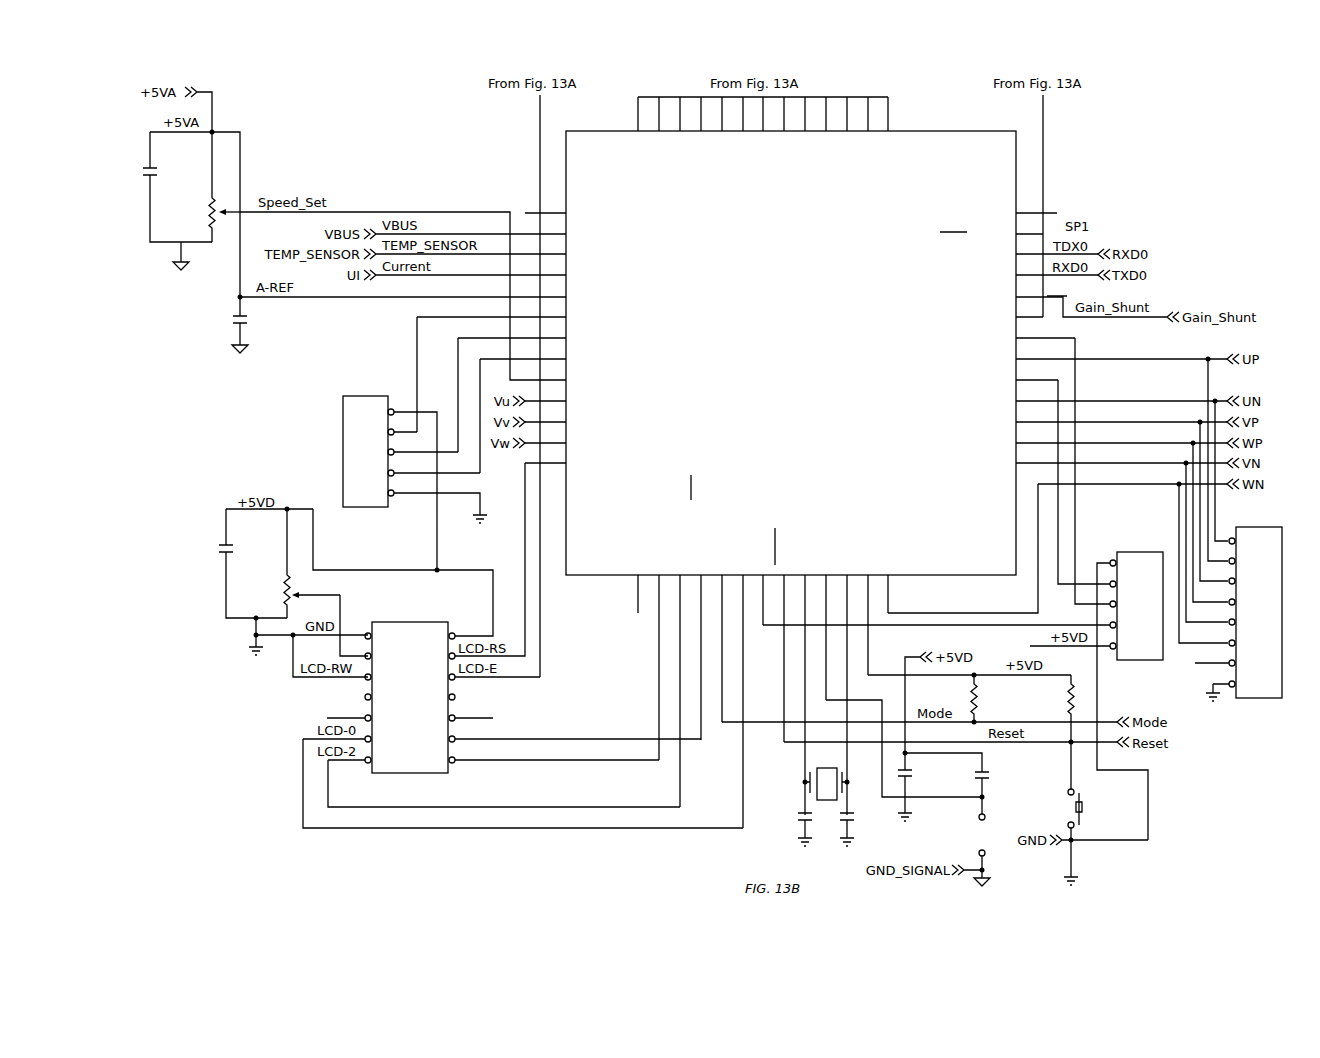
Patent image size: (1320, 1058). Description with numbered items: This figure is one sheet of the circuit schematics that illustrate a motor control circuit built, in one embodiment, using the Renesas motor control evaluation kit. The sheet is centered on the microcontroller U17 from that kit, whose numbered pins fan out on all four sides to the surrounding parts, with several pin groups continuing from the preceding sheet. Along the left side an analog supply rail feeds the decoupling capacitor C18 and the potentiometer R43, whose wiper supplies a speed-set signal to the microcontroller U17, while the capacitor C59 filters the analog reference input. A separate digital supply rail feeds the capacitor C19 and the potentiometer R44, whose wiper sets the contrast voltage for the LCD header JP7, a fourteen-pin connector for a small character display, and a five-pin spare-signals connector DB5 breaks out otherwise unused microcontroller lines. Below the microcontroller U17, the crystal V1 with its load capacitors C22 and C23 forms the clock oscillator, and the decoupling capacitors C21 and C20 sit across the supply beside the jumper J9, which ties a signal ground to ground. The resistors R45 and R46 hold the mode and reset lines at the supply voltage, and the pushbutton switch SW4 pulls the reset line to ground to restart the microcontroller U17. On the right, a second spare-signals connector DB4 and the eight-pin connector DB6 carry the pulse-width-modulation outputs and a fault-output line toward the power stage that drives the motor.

The microcontroller R8C25 U17 is at (876, 462).
The capacitor 0.1uF C18 is at (168, 176).
The potentiometer 10K speed set R43 is at (207, 194).
The capacitor 0.1uF C59 is at (218, 325).
The capacitor 0.1uF C19 is at (246, 554).
The potentiometer 10K R44 is at (296, 571).
The spare signals 1 connector DB5 is at (408, 474).
The LCD 0802 connector JP7 is at (502, 699).
The 20MHz crystal V1 is at (800, 775).
The capacitor 22pF C22 is at (786, 823).
The capacitor 22pF C23 is at (865, 823).
The capacitor 0.1uF C21 is at (925, 788).
The capacitor 1uF 35V C20 is at (1013, 785).
The jumper J9 is at (950, 845).
The resistor 4K7 R45 is at (989, 698).
The resistor 10K R46 is at (1055, 708).
The reset switch SW4 is at (1095, 813).
The spare signals 2 connector DB4 is at (1145, 617).
The PWM+FO connector DB6 is at (1241, 615).